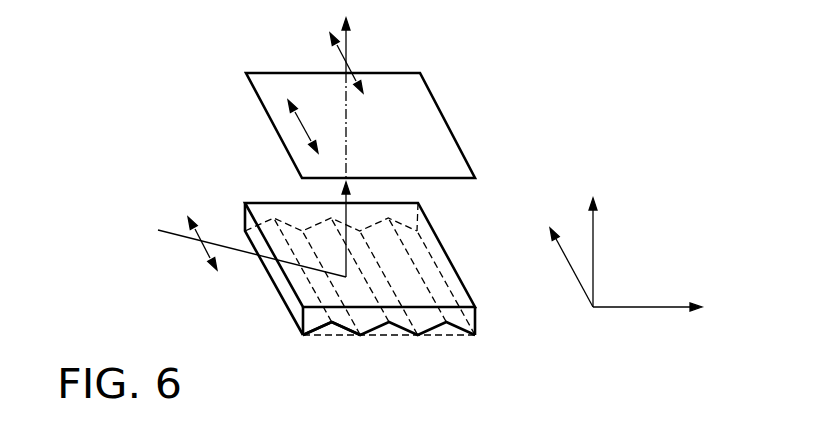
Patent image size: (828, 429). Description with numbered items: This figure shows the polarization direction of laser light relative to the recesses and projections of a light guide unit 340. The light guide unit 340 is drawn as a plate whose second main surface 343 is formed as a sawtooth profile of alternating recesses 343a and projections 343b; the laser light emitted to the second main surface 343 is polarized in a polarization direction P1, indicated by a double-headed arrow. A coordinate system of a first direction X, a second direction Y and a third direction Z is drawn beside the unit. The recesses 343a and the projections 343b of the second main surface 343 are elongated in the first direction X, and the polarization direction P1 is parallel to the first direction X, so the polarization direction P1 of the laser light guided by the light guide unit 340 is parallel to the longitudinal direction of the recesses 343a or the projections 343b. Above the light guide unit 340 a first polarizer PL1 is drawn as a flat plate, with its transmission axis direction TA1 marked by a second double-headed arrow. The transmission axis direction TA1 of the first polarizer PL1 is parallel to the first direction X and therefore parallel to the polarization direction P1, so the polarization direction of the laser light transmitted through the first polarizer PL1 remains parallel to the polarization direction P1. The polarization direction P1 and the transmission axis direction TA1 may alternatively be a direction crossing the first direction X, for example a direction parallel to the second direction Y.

The light guide unit 340 is at (392, 293).
The second main surface 343 is at (373, 352).
The recesses 343a is at (327, 329).
The projections 343b is at (360, 337).
The first polarizer PL1 is at (443, 115).
The transmission axis direction TA1 is at (303, 134).
The polarization direction P1 is at (267, 145).
The first direction X is at (565, 255).
The second direction Y is at (658, 309).
The Z direction Z is at (593, 239).